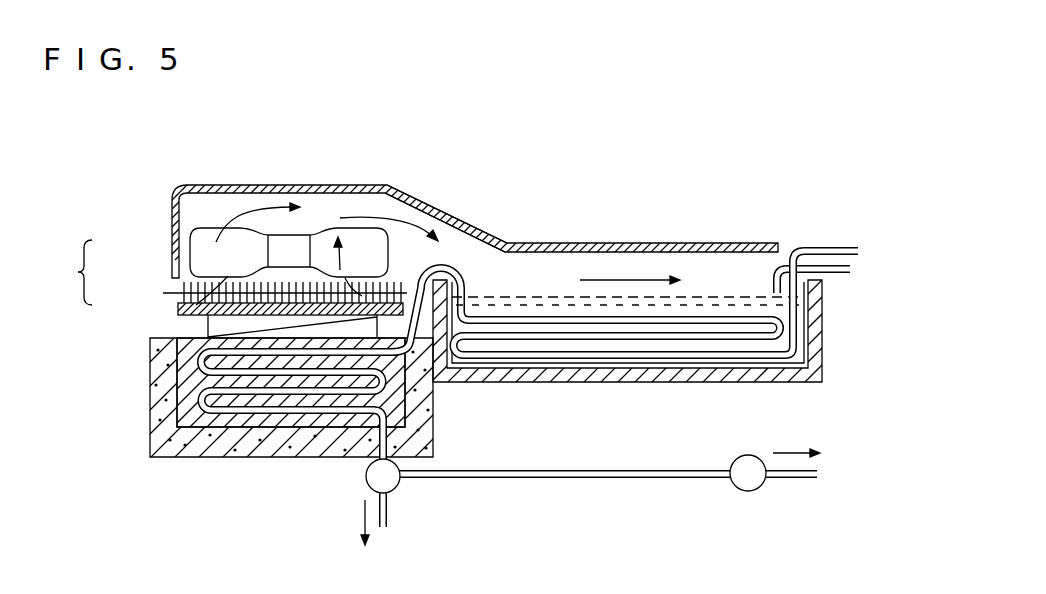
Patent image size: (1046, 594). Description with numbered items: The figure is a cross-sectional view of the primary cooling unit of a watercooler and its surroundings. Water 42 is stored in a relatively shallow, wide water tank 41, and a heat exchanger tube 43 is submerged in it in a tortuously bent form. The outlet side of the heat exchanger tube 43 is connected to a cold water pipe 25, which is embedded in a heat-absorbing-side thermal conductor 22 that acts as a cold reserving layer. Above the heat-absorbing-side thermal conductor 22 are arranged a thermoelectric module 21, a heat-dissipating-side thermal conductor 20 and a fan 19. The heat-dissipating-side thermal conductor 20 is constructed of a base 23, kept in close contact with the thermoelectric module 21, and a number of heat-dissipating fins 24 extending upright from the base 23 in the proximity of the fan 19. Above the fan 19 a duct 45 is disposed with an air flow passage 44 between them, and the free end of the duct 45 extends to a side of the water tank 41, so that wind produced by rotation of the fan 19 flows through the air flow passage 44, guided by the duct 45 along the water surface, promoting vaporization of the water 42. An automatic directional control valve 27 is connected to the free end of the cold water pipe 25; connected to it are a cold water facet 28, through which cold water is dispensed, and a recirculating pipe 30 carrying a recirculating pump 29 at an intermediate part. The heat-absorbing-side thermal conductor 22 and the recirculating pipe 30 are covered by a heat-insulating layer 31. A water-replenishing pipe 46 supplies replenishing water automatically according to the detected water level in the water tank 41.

The fan 19 is at (202, 238).
The heat-dissipating-side thermal conductor 20 is at (66, 272).
The thermoelectric module 21 is at (225, 323).
The heat-absorbing-side thermal conductor 22 is at (192, 415).
The base 23 is at (178, 306).
The heat-dissipating fins 24 is at (185, 288).
The cold water pipe 25 is at (233, 407).
The automatic directional control valve 27 is at (397, 480).
The cold water facet 28 is at (390, 517).
The recirculating pump 29 is at (750, 485).
The recirculating pipe 30 is at (565, 477).
The heat-insulating layer 31 is at (272, 437).
The water tank 41 is at (817, 365).
The water 42 is at (803, 328).
The heat exchanger tube 43 is at (683, 358).
The air flow passage 44 is at (317, 207).
The duct 45 is at (455, 218).
The water-replenishing pipe 46 is at (845, 280).